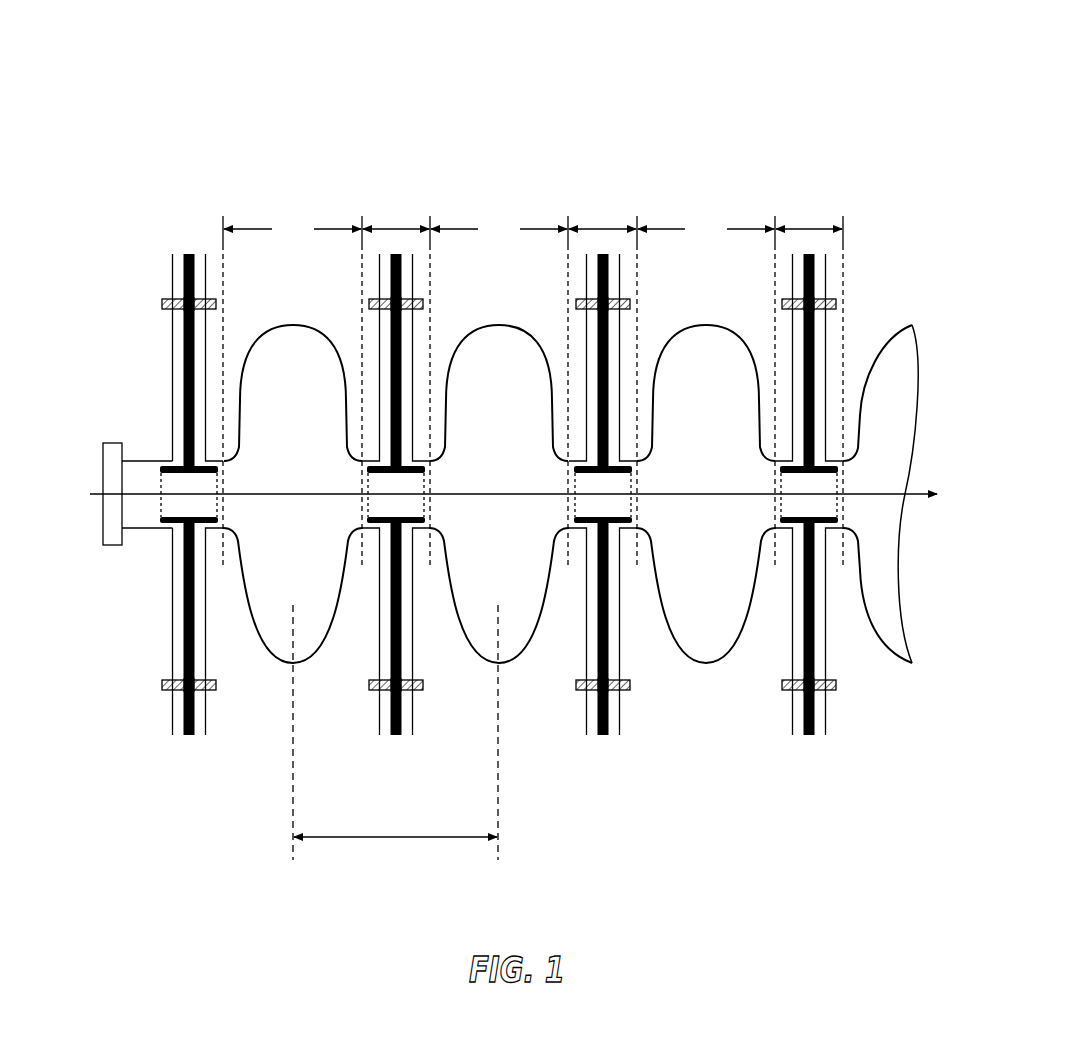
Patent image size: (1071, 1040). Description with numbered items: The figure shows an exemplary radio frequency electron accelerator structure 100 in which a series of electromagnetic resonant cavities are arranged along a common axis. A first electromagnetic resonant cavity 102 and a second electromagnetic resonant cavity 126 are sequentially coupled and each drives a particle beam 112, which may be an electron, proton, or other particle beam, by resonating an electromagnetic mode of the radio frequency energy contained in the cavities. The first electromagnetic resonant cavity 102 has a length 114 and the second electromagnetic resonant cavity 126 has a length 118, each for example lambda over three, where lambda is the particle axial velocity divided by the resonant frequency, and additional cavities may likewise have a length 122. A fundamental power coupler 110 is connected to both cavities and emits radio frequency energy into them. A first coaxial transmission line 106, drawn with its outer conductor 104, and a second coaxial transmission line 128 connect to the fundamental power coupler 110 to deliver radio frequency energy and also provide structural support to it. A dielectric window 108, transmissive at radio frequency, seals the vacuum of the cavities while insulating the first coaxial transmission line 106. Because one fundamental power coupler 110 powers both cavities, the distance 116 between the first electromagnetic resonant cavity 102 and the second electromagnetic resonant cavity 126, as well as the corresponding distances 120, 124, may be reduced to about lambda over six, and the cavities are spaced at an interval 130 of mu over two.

The radio frequency electron accelerator structure 100 is at (821, 67).
The first electromagnetic resonant cavity 102 is at (271, 327).
The drift tube outer wall 104 is at (375, 341).
The first coaxial transmission line 106 is at (405, 338).
The dielectric window 108 is at (426, 302).
The fundamental power coupler 110 is at (430, 482).
The particle beam 112 is at (716, 491).
The length of first electromagnetic resonant cavity 114 is at (293, 215).
The distance between first and second electromagnetic resonant cavities 116 is at (397, 200).
The length of second electromagnetic resonant cavity 118 is at (499, 215).
The distance between resonant cavities 120 is at (603, 200).
The length of additional resonant cavities 122 is at (706, 215).
The distance between resonant cavities 124 is at (809, 200).
The second electromagnetic resonant cavity 126 is at (518, 326).
The second coaxial transmission line 128 is at (380, 737).
The interval between first and second electromagnetic resonant cavities 130 is at (396, 840).